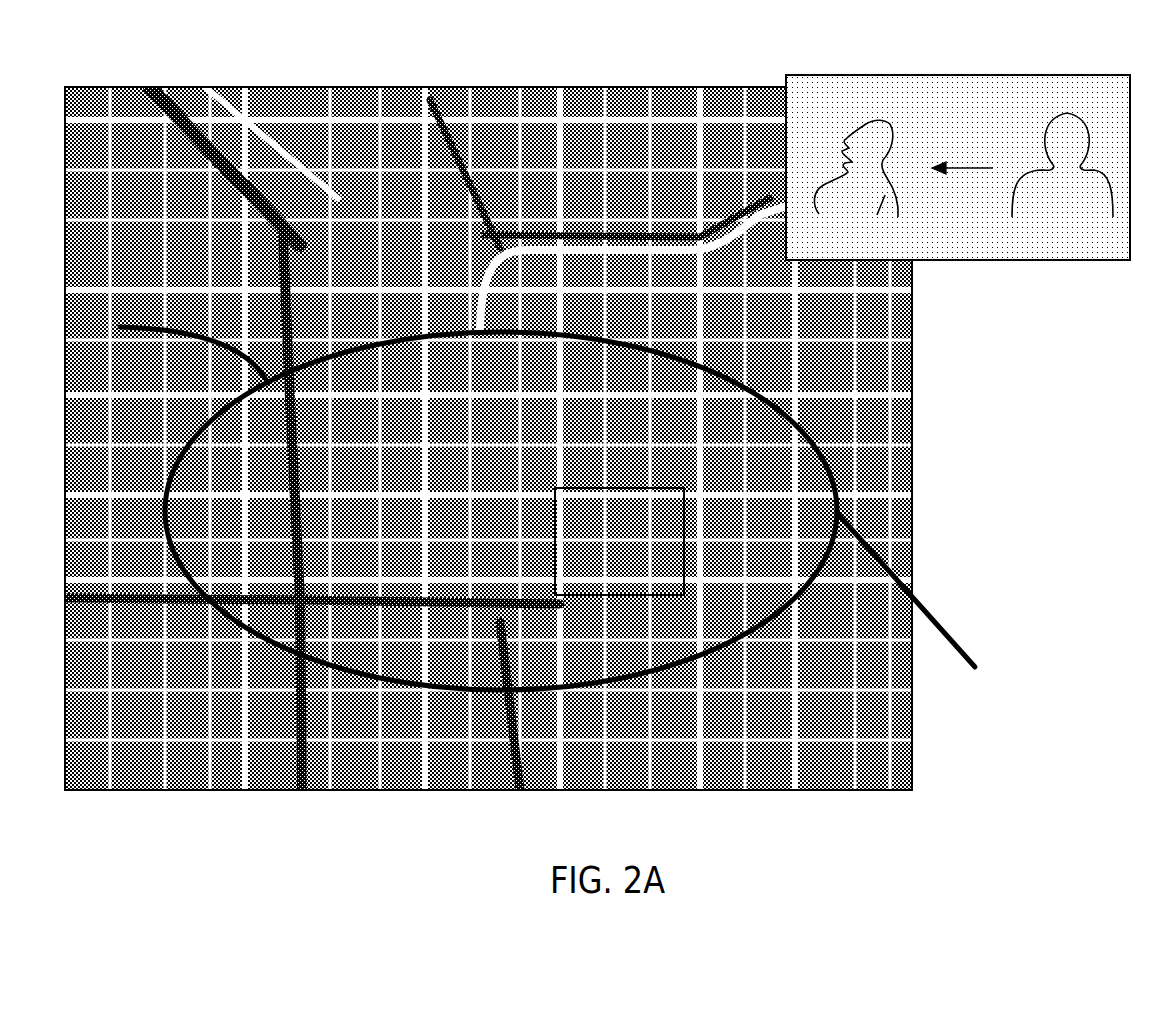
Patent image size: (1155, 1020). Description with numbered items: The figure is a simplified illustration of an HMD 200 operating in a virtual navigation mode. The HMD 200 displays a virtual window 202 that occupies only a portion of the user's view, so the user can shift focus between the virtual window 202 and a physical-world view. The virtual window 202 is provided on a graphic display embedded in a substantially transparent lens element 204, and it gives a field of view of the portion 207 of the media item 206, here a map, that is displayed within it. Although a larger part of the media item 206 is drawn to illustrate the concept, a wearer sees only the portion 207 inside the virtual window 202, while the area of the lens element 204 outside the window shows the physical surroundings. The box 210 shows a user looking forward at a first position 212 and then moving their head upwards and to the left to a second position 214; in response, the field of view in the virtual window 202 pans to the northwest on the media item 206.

The HMD 200 is at (290, 665).
The virtual window 202 is at (597, 488).
The lens element 204 is at (706, 650).
The media item 206 is at (912, 745).
The portion 207 is at (572, 548).
The box 210 is at (1013, 260).
The first position 212 is at (1075, 207).
The second position 214 is at (864, 207).